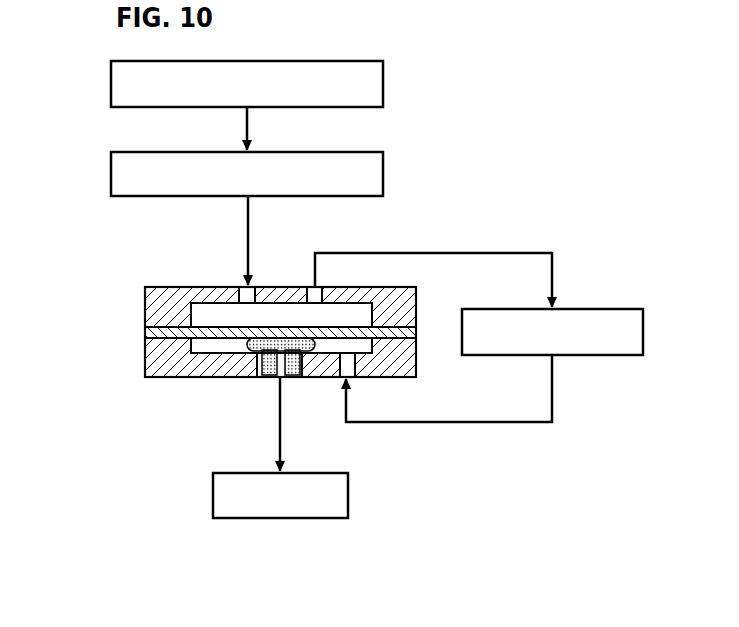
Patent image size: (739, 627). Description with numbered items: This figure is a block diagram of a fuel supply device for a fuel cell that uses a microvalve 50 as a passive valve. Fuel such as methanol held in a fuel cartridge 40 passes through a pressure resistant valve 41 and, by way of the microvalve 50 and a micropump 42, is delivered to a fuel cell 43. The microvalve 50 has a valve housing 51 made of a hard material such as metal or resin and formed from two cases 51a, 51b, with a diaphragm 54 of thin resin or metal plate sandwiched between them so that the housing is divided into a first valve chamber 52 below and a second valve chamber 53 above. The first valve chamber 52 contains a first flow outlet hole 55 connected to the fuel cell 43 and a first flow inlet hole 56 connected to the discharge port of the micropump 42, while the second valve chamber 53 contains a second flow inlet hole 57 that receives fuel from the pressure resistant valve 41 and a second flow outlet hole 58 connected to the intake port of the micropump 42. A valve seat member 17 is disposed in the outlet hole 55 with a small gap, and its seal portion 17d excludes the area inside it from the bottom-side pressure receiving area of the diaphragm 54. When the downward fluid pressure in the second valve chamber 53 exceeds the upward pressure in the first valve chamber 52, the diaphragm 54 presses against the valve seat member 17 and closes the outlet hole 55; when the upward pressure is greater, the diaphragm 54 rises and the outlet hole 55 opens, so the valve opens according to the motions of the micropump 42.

The fuel cartridge 40 is at (384, 86).
The pressure resistant valve 41 is at (384, 171).
The micropump 42 is at (616, 308).
The fuel cell 43 is at (213, 489).
The microvalve 50 is at (252, 324).
The valve housing 51 is at (257, 327).
The lower case 51a is at (162, 353).
The upper case 51b is at (162, 312).
The first valve chamber 52 is at (215, 355).
The second valve chamber 53 is at (218, 312).
The diaphragm 54 is at (350, 323).
The first flow outlet hole 55 is at (306, 368).
The first flow inlet hole 56 is at (352, 366).
The second flow inlet hole 57 is at (252, 292).
The second flow outlet hole 58 is at (317, 293).
The valve seat member 17 is at (268, 377).
The seal portion 17d is at (312, 338).